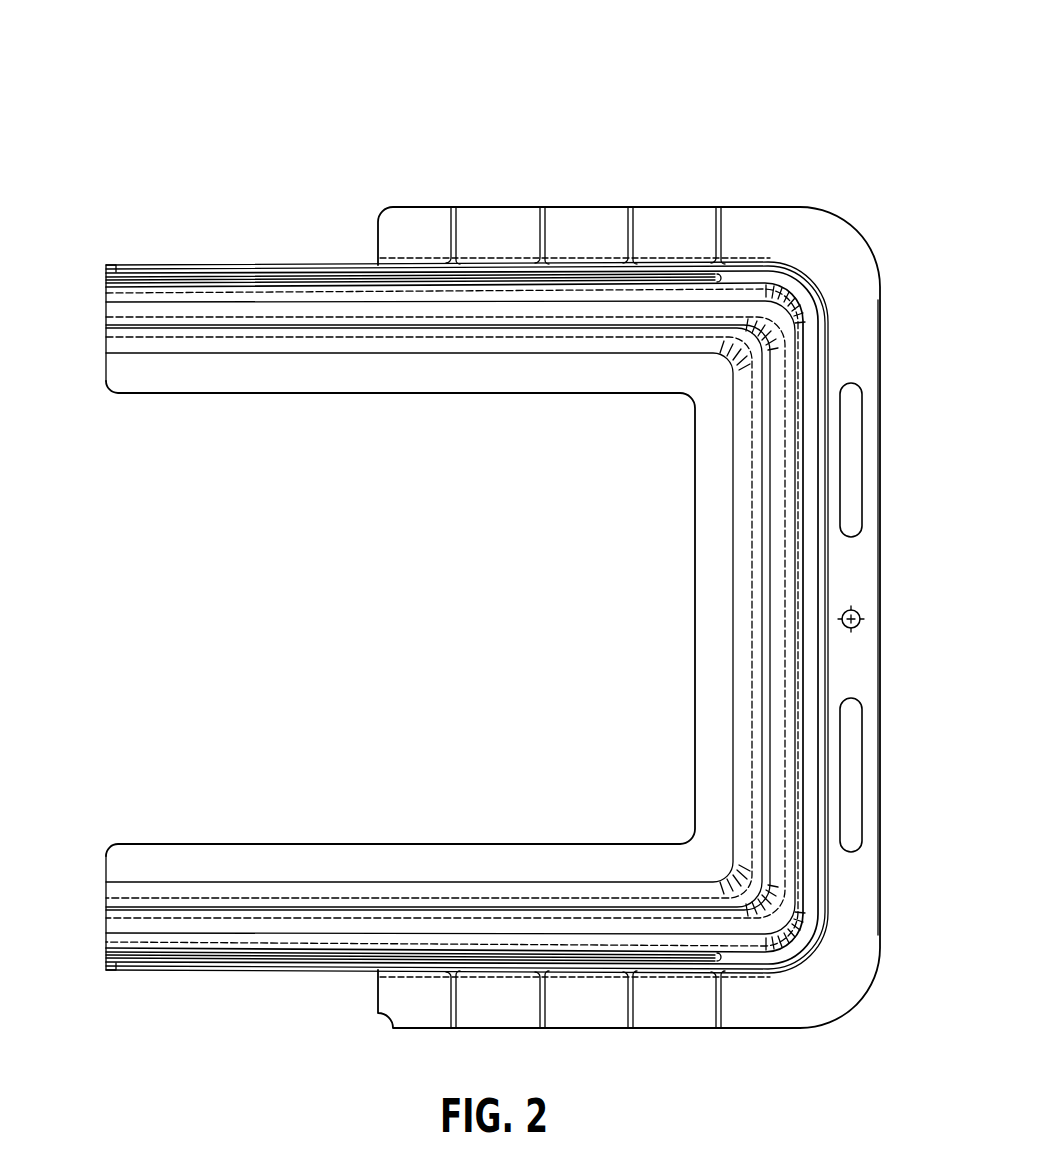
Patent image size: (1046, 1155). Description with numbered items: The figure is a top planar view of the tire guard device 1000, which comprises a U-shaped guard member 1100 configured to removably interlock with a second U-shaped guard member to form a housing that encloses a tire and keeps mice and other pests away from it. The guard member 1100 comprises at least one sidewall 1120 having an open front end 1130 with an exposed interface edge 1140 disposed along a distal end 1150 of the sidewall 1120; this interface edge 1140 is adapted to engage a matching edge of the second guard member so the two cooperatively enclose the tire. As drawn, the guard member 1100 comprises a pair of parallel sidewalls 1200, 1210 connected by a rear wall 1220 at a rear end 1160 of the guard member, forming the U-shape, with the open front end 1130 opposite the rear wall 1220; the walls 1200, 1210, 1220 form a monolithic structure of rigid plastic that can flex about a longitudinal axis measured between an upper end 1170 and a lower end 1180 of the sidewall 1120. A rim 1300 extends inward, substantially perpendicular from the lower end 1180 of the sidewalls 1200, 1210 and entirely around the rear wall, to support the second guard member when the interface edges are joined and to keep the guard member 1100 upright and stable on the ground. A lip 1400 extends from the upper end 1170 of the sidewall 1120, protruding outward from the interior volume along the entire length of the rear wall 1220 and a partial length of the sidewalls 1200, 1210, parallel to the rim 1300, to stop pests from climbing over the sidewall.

The tire guard device 1000 is at (781, 95).
The upper end 1170 is at (573, 207).
The lip 1400 is at (851, 222).
The U-shaped guard member 1100 is at (205, 272).
The sidewall 1200 is at (305, 272).
The exposed interface edge 1140 is at (106, 318).
The rear wall 1220 is at (800, 437).
The distal end 1150 is at (133, 323).
The sidewall 1120 is at (127, 916).
The lower end 1180 is at (327, 393).
The rim 1300 is at (695, 538).
The open front end 1130 is at (165, 560).
The rear end 1160 is at (905, 779).
The sidewall 1210 is at (253, 970).